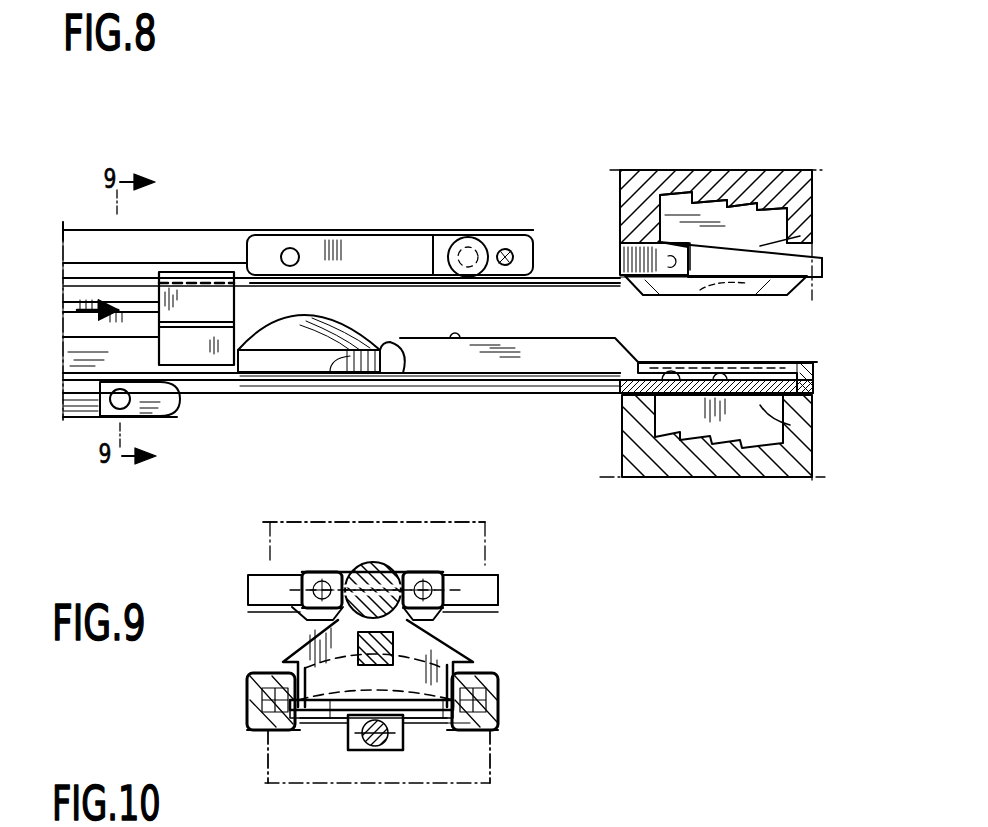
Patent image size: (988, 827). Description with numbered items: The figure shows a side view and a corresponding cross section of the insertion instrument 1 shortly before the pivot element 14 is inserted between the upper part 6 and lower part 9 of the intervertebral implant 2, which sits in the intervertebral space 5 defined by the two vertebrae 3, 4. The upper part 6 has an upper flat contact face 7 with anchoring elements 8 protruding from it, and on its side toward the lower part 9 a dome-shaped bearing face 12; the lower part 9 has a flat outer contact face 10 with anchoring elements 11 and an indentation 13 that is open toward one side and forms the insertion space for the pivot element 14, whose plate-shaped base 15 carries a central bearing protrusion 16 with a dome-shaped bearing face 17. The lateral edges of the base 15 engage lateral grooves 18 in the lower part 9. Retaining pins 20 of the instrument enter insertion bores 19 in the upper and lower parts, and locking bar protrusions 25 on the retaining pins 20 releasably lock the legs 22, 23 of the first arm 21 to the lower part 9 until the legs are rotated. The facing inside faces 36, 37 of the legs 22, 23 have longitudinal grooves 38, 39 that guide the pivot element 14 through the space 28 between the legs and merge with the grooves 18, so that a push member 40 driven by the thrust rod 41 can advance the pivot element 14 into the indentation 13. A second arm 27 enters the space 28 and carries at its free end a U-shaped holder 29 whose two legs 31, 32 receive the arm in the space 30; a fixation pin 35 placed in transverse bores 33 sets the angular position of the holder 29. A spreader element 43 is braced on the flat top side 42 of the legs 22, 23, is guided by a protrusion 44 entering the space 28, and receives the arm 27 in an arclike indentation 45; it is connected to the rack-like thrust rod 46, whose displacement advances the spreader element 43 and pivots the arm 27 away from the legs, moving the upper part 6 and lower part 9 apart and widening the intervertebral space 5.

In FIG. 8, the insertion instrument 1 is at (68, 400).
In FIG. 9, the insertion instrument 1 is at (250, 753).
In FIG. 8, the intervertebral implant 2 is at (798, 214).
In FIG. 8, the vertebra 3 is at (760, 172).
In FIG. 9, the vertebra 3 is at (485, 528).
In FIG. 8, the vertebra 4 is at (810, 468).
In FIG. 9, the vertebra 4 is at (490, 770).
In FIG. 8, the intervertebral space 5 is at (815, 322).
In FIG. 8, the upper part 6 is at (834, 267).
In FIG. 9, the upper part 6 is at (498, 598).
In FIG. 8, the upper flat contact face 7 is at (800, 256).
In FIG. 8, the anchoring elements 8 is at (770, 240).
In FIG. 8, the lower part 9 is at (832, 386).
In FIG. 8, the flat outer contact face 10 is at (805, 402).
In FIG. 8, the anchoring elements 11 is at (790, 430).
In FIG. 8, the dome-shaped bearing face 12 is at (718, 278).
In FIG. 8, the indentation 13 is at (715, 363).
In FIG. 8, the pivot element 14 is at (291, 384).
In FIG. 9, the pivot element 14 is at (320, 708).
In FIG. 8, the base 15 is at (330, 365).
In FIG. 8, the bearing protrusion 16 is at (350, 352).
In FIG. 9, the bearing protrusion 16 is at (345, 735).
In FIG. 8, the dome-shaped bearing face 17 is at (400, 365).
In FIG. 9, the dome-shaped bearing face 17 is at (310, 650).
In FIG. 8, the lateral grooves 18 is at (790, 363).
In FIG. 8, the insertion bores 19 is at (655, 255).
In FIG. 8, the retaining pins 20 is at (630, 240).
In FIG. 9, the retaining pins 20 is at (325, 572).
In FIG. 8, the first arm 21 is at (500, 404).
In FIG. 9, the first arm 21 is at (493, 752).
In FIG. 8, the leg 22 is at (538, 385).
In FIG. 9, the leg 22 is at (245, 733).
In FIG. 9, the leg 23 is at (498, 700).
In FIG. 8, the locking bar protrusions 25 is at (670, 400).
In FIG. 9, the locking bar protrusions 25 is at (462, 716).
In FIG. 8, the second arm 27 is at (243, 220).
In FIG. 9, the second arm 27 is at (378, 556).
In FIG. 8, the space 28 is at (282, 303).
In FIG. 9, the space 28 is at (487, 647).
In FIG. 8, the U-shaped holder 29 is at (335, 228).
In FIG. 9, the U-shaped holder 29 is at (426, 558).
In FIG. 9, the space 30 is at (395, 570).
In FIG. 9, the leg 31 is at (300, 580).
In FIG. 8, the leg 32 is at (375, 255).
In FIG. 9, the leg 32 is at (498, 585).
In FIG. 8, the transverse bores 33 is at (505, 250).
In FIG. 8, the fixation pin 35 is at (470, 245).
In FIG. 8, the inside face 36 is at (575, 352).
In FIG. 9, the inside face 36 is at (300, 692).
In FIG. 9, the inside face 37 is at (472, 668).
In FIG. 8, the longitudinal groove 38 is at (585, 375).
In FIG. 9, the longitudinal groove 38 is at (305, 728).
In FIG. 9, the longitudinal groove 39 is at (408, 730).
In FIG. 8, the push member 40 is at (200, 382).
In FIG. 9, the push member 40 is at (392, 750).
In FIG. 8, the thrust rod 41 is at (158, 412).
In FIG. 9, the thrust rod 41 is at (370, 752).
In FIG. 8, the flat top side 42 is at (445, 370).
In FIG. 9, the flat top side 42 is at (270, 675).
In FIG. 8, the spreader element 43 is at (206, 292).
In FIG. 9, the spreader element 43 is at (440, 626).
In FIG. 8, the protrusion 44 is at (222, 390).
In FIG. 9, the protrusion 44 is at (410, 735).
In FIG. 8, the indentation 45 is at (177, 285).
In FIG. 9, the indentation 45 is at (357, 572).
In FIG. 8, the thrust rod 46 is at (73, 300).
In FIG. 9, the thrust rod 46 is at (358, 648).